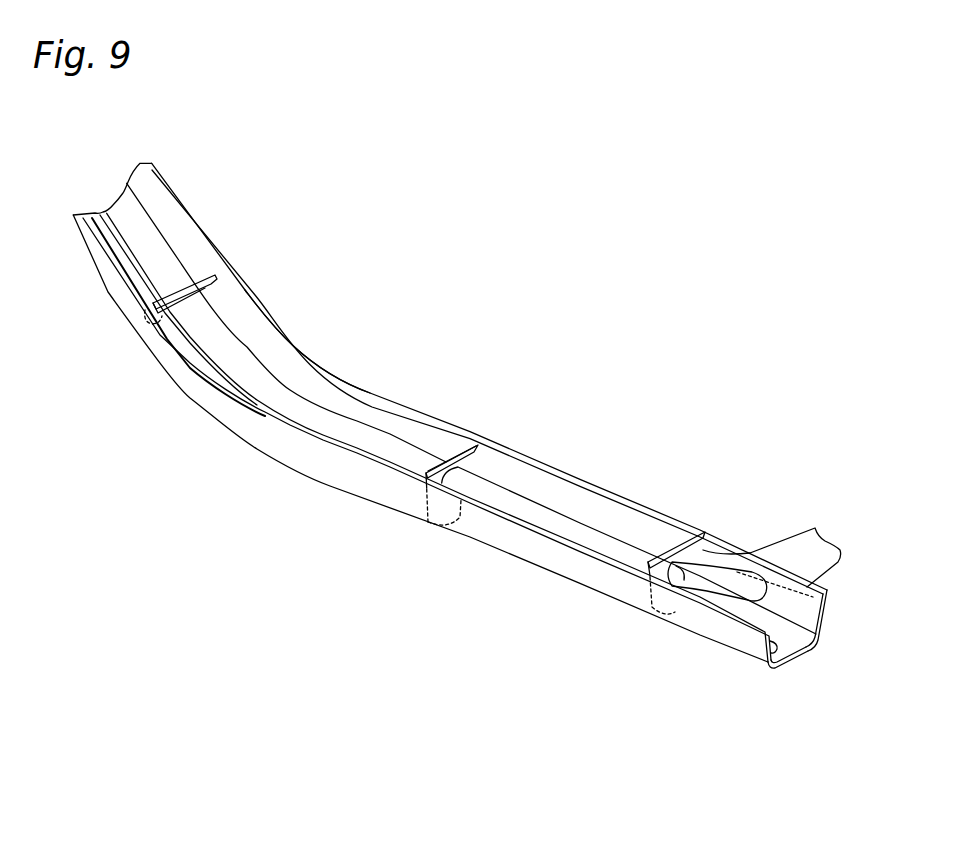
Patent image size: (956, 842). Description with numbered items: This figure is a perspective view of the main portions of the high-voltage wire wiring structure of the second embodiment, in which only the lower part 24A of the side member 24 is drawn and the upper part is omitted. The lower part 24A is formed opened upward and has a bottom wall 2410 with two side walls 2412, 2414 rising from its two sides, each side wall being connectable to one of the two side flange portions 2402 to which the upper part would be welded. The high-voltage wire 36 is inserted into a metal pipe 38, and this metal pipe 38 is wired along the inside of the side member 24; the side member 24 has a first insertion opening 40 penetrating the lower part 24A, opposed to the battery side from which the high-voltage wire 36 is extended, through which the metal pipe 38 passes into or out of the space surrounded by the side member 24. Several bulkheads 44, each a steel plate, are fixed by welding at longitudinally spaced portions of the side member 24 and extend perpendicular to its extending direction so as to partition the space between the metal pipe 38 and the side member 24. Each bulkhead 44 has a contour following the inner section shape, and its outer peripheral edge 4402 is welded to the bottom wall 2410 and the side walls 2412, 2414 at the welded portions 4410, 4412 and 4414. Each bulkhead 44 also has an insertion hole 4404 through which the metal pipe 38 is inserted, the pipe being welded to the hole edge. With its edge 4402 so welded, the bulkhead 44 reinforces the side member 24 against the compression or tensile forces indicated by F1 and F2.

The side member 24 is at (465, 443).
The lower part 24A is at (420, 408).
The high-voltage wire 36 is at (311, 355).
The metal pipe 38 is at (307, 341).
The bulkhead 44 is at (178, 287).
The welded portion 4410 is at (482, 470).
The welded portion 4412 is at (467, 510).
The welded portion 4414 is at (425, 497).
The outer peripheral edge 4402 is at (698, 563).
The insertion hole 4404 is at (652, 607).
The flange portion 2402 is at (703, 550).
The first insertion opening 40 is at (747, 553).
The bottom wall 2410 is at (793, 647).
The side wall 2412 is at (747, 657).
The side wall 2414 is at (800, 607).
The compression force or tensile force F1 is at (328, 497).
The compression force or tensile force F2 is at (298, 490).